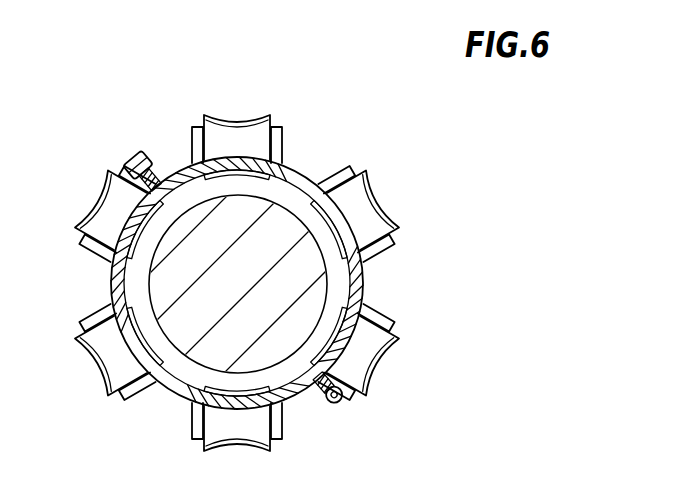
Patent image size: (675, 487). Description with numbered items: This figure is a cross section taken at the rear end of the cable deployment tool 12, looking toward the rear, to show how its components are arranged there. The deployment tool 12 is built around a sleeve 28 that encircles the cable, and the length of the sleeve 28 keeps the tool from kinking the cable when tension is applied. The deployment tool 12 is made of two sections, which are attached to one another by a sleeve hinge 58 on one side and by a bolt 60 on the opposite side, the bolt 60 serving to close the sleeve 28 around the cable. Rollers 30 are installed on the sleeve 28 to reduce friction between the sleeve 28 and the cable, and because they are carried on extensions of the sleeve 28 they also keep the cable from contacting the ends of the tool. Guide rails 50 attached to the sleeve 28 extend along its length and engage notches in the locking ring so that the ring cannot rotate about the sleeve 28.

The deployment tool 12 is at (298, 165).
The sleeve 28 is at (110, 283).
The rollers 30 is at (238, 118).
The guide rails 50 is at (158, 168).
The sleeve hinge 58 is at (340, 408).
The bolt 60 is at (148, 155).